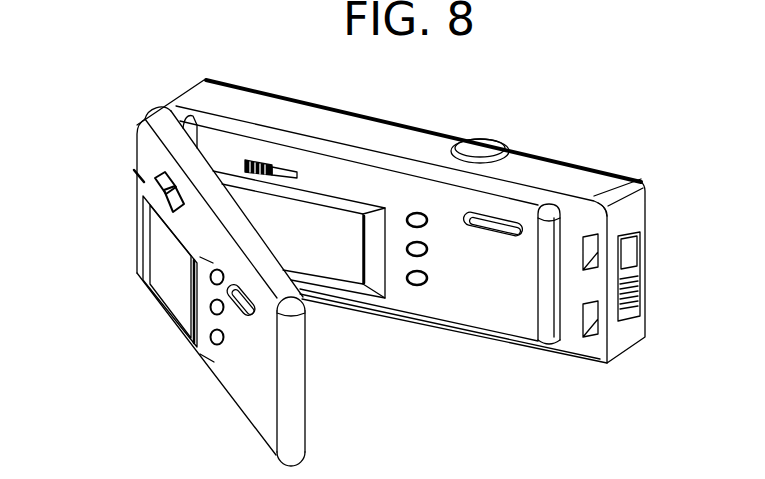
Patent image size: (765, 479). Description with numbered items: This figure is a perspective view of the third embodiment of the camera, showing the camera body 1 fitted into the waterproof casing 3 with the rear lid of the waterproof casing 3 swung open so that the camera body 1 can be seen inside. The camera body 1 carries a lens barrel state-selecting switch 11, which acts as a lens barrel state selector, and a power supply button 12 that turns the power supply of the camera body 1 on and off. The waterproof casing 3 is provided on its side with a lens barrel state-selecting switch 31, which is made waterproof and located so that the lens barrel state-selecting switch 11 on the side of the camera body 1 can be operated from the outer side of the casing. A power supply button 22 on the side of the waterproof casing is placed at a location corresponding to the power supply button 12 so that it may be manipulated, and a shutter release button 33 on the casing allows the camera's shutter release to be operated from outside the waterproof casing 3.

The camera body 1 is at (391, 234).
The waterproof casing 3 is at (177, 260).
The lens barrel state-selecting switch 11 is at (263, 159).
The power supply button 12 is at (418, 208).
The power supply button 22 is at (211, 283).
The lens barrel state-selecting switch 31 is at (153, 183).
The shutter release button 33 is at (485, 142).